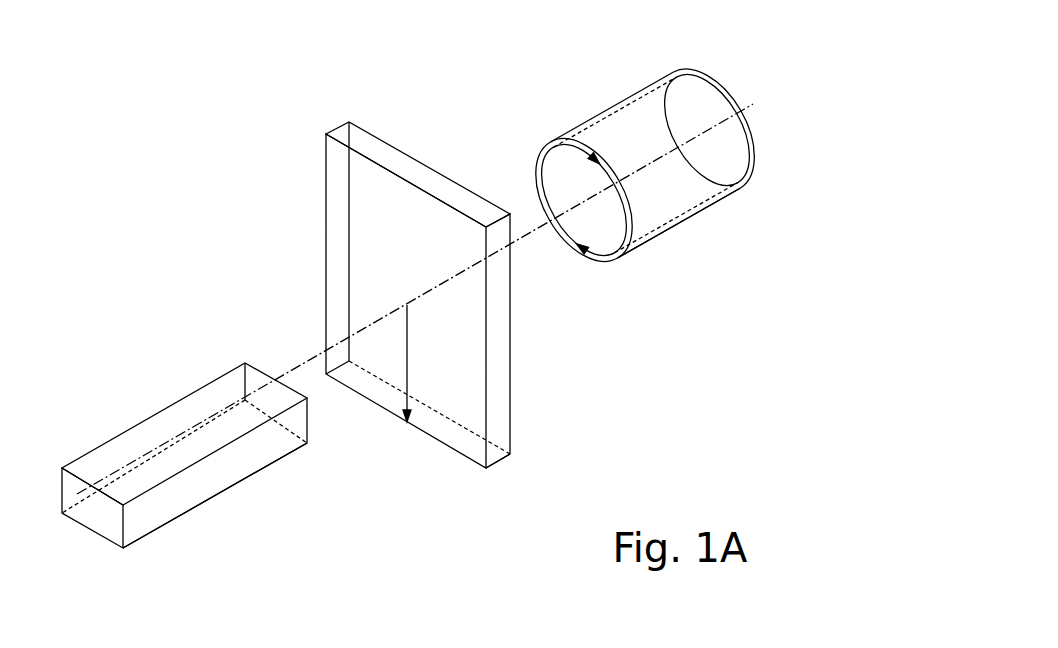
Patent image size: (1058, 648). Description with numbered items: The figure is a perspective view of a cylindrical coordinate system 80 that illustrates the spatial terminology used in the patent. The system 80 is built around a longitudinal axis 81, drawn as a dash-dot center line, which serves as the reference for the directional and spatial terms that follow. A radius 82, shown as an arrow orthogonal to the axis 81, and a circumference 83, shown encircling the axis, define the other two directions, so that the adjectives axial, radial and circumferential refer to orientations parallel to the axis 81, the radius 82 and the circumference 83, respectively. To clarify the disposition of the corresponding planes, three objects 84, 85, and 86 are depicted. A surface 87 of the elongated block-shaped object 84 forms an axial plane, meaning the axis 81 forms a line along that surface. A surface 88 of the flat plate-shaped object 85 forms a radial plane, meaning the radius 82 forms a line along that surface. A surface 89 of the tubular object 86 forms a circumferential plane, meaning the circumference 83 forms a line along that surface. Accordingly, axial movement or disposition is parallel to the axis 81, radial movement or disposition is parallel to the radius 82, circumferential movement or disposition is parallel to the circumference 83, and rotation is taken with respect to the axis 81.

The cylindrical coordinate system 80 is at (277, 172).
The longitudinal axis 81 is at (740, 105).
The radius 82 is at (407, 358).
The circumference 83 is at (537, 168).
The object 84 is at (148, 532).
The object 85 is at (529, 466).
The object 86 is at (679, 241).
The surface 87 is at (145, 437).
The surface 88 is at (340, 253).
The surface 89 is at (610, 106).